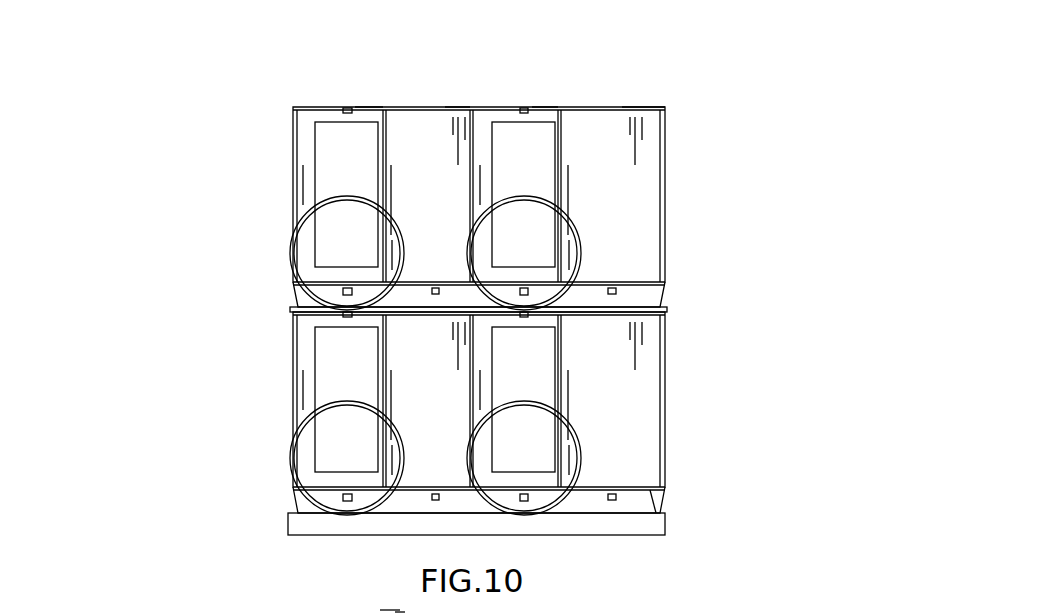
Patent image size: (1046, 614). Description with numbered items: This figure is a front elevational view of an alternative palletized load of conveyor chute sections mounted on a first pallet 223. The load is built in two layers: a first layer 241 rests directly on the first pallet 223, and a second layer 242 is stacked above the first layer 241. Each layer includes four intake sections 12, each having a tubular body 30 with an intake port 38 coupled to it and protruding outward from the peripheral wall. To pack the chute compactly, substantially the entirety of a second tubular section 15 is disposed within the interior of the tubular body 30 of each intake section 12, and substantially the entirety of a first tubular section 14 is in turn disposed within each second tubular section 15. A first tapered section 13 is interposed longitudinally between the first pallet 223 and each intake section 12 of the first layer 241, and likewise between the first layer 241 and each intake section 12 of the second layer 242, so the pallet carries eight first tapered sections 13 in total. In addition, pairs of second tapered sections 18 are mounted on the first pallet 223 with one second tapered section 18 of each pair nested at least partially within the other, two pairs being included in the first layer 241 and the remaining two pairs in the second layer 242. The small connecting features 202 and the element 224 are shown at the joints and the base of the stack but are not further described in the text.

The intake section 12 is at (302, 150).
The first tapered section 13 is at (330, 290).
The first tubular section 14 is at (385, 613).
The second tubular section 15 is at (398, 613).
The second tapered section 18 is at (318, 228).
The tubular body 30 is at (362, 107).
The intake port 38 is at (360, 177).
The connecting tab 202 is at (345, 106).
The first pallet 223 is at (665, 525).
The foot 224 is at (660, 511).
The first layer 241 is at (122, 416).
The second layer 242 is at (137, 189).